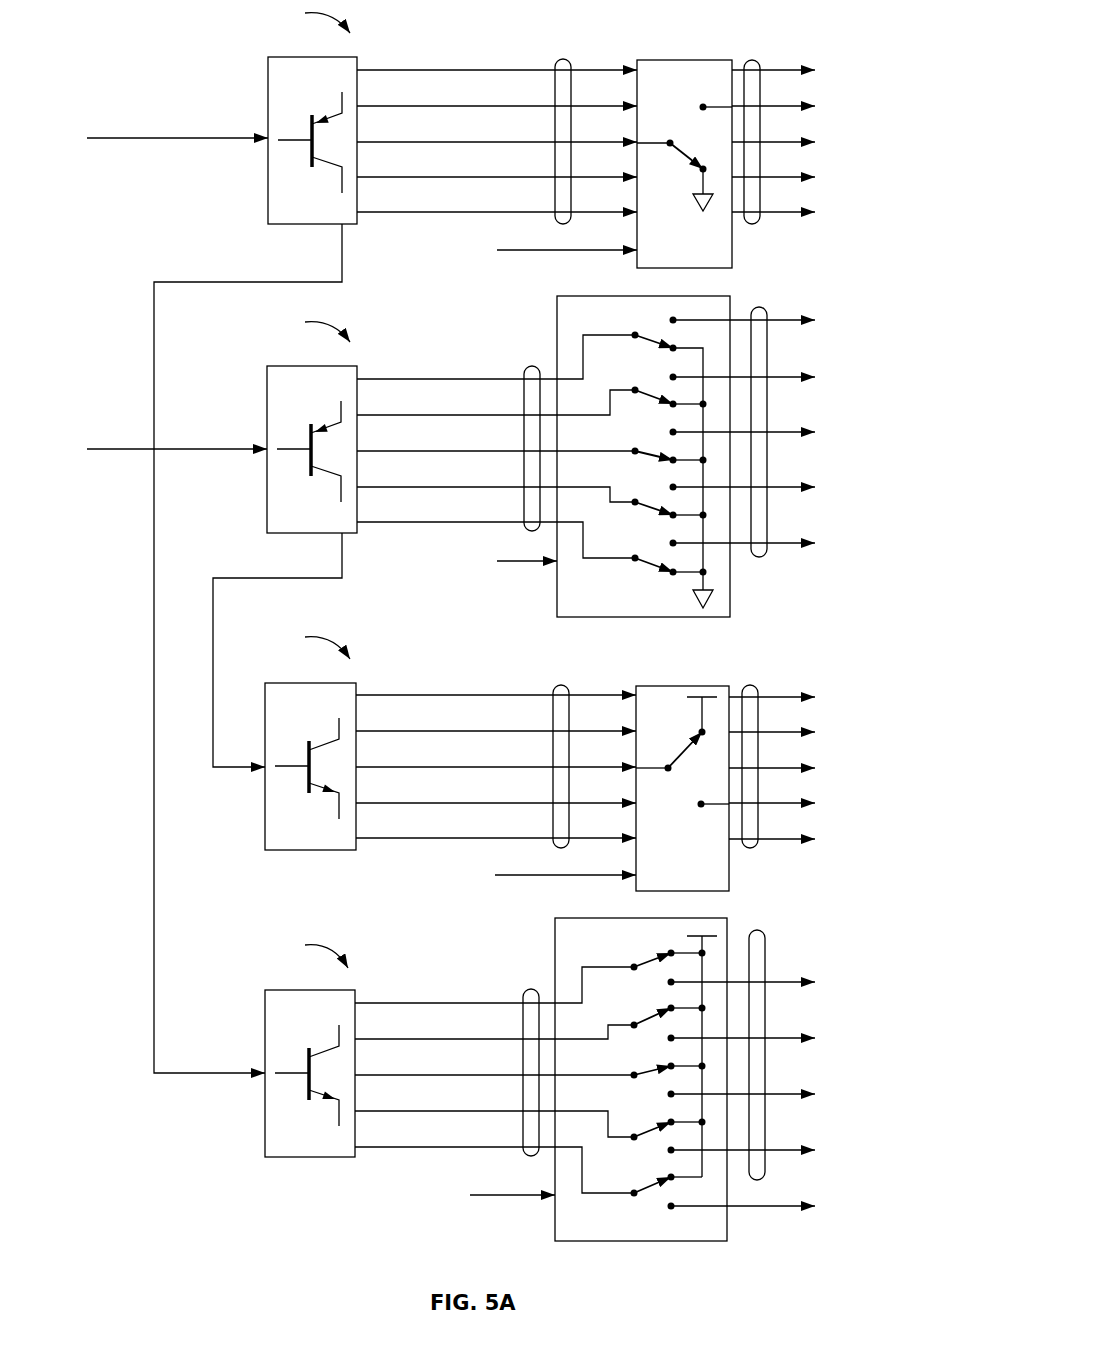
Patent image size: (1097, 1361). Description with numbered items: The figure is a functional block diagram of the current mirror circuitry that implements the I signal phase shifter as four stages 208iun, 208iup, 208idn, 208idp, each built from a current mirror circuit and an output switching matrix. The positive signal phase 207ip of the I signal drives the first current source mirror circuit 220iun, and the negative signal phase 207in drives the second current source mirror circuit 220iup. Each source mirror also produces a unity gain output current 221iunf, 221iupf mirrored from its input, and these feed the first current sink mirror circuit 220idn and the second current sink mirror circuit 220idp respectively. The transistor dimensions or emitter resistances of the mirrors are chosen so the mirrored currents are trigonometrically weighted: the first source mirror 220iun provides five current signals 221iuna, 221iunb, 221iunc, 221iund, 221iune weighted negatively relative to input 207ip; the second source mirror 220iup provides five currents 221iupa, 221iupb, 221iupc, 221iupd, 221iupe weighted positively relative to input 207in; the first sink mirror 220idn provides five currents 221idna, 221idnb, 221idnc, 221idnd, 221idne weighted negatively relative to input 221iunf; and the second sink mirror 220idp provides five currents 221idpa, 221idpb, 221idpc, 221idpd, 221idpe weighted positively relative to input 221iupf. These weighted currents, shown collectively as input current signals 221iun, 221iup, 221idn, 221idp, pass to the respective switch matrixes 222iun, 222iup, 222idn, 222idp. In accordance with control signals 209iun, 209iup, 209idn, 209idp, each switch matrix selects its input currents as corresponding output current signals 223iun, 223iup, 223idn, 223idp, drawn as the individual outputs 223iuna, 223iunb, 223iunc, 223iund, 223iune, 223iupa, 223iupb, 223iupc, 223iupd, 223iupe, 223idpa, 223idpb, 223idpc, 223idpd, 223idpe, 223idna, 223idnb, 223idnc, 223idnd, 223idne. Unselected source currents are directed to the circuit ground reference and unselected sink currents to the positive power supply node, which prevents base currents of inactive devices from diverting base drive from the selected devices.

The positive signal phase of the I signal 207ip is at (128, 136).
The negative signal phase of the I signal 207in is at (128, 448).
The first stage of I signal phase shifter 208iun is at (292, 18).
The second stage of I signal phase shifter 208iup is at (292, 327).
The fourth stage of I signal phase shifter 208idp is at (292, 643).
The third stage of I signal phase shifter 208idn is at (290, 951).
The first current source mirror circuit 220iun is at (268, 182).
The second current source mirror circuit 220iup is at (267, 490).
The second current sink mirror circuit 220idp is at (265, 808).
The first current sink mirror circuit 220idn is at (265, 1115).
The current signal 221iuna is at (464, 69).
The current signal 221iunb is at (464, 105).
The current signal 221iunc is at (464, 141).
The current signal 221iund is at (464, 176).
The current signal 221iune is at (464, 211).
The unity gain output current 221iunf is at (204, 282).
The input current signals of first switch matrix 221iun is at (554, 58).
The current 221iupa is at (464, 378).
The current 221iupb is at (464, 414).
The current 221iupc is at (464, 450).
The current 221iupd is at (464, 486).
The current 221iupe is at (464, 521).
The unity gain output current 221iupf is at (237, 578).
The input current signals of second switch matrix 221iup is at (525, 366).
The current 221idpa is at (462, 693).
The current 221idpb is at (462, 729).
The current 221idpc is at (462, 765).
The current 221idpd is at (462, 801).
The current 221idpe is at (462, 836).
The input current signals of fourth switch matrix 221idp is at (553, 685).
The current 221idna is at (462, 1002).
The current 221idnb is at (462, 1038).
The current 221idnc is at (462, 1074).
The current 221idnd is at (462, 1110).
The current 221idne is at (462, 1146).
The input current signals of third switch matrix 221idn is at (525, 989).
The control signal 209iun is at (543, 250).
The control signal 209iup is at (520, 562).
The control signal 209idp is at (540, 875).
The control signal 209idn is at (517, 1195).
The output switching matrix 222iun is at (683, 60).
The output switching matrix 222iup is at (556, 318).
The output switching matrix 222idp is at (683, 686).
The output switching matrix 222idn is at (555, 940).
The output current signal 223iun is at (757, 60).
The output current signal 223iup is at (774, 292).
The output current signal 223idp is at (774, 668).
The output current signal 223idn is at (774, 912).
The switched output current a 223iuna is at (782, 70).
The switched output current b 223iunb is at (782, 106).
The switched output current c 223iunc is at (782, 142).
The switched output current d 223iund is at (782, 177).
The switched output current e 223iune is at (782, 212).
The switched output current a 223iupa is at (782, 320).
The switched output current b 223iupb is at (782, 377).
The switched output current c 223iupc is at (782, 432).
The switched output current d 223iupd is at (782, 487).
The switched output current e 223iupe is at (782, 543).
The switched output current a 223idpa is at (782, 697).
The switched output current b 223idpb is at (782, 732).
The switched output current c 223idpc is at (782, 768).
The switched output current d 223idpd is at (782, 803).
The switched output current e 223idpe is at (782, 839).
The switched output current a 223idna is at (782, 982).
The switched output current b 223idnb is at (782, 1038).
The switched output current c 223idnc is at (782, 1094).
The switched output current d 223idnd is at (782, 1150).
The switched output current e 223idne is at (782, 1206).